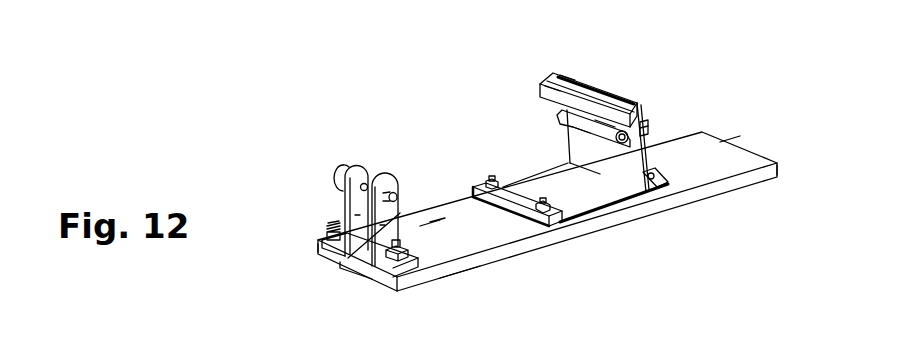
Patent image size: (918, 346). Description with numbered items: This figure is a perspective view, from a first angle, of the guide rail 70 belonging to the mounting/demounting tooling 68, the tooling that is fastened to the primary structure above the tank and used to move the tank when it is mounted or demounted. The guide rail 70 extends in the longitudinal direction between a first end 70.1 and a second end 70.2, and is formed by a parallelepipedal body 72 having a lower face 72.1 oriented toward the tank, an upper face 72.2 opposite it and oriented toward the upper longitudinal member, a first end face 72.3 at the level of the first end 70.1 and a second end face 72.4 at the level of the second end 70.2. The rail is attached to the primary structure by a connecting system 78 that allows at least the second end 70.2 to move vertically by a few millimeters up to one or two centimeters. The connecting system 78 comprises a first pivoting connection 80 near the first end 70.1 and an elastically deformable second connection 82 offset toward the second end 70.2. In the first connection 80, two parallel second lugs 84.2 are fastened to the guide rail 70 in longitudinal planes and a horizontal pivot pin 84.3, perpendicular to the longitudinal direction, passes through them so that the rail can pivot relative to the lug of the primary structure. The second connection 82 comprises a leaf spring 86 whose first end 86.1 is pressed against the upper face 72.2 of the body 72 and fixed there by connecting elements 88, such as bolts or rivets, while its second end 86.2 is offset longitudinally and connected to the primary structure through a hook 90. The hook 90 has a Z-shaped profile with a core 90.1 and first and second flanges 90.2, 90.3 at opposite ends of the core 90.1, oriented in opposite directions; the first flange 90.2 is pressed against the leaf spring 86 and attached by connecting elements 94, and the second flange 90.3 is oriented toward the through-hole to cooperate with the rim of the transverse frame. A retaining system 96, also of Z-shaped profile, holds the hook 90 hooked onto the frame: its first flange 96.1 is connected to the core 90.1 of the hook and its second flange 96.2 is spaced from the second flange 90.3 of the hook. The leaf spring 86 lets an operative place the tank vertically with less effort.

The mounting/demounting tooling 68 is at (430, 140).
The guide rail 70 is at (766, 152).
The first end 70.1 is at (383, 279).
The second end 70.2 is at (735, 141).
The parallelepipedal body 72 is at (494, 260).
The lower face 72.1 is at (460, 272).
The upper face 72.2 is at (430, 233).
The first end face 72.3 is at (317, 249).
The second end face 72.4 is at (780, 168).
The connecting system 78 is at (326, 172).
The first pivoting connection 80 is at (362, 145).
The second connection 82 is at (615, 70).
The second lug 84.2 is at (377, 222).
The pivot pin 84.3 is at (350, 258).
The leaf spring 86 is at (540, 168).
The first end 86.1 is at (471, 214).
The second end 86.2 is at (648, 192).
The connecting element 88 is at (540, 207).
The hook 90 is at (660, 142).
The core 90.1 is at (600, 128).
The first flange 90.2 is at (666, 196).
The second flange 90.3 is at (565, 76).
The connecting elements 94 is at (647, 176).
The retaining system 96 is at (520, 85).
The first flange 96.1 is at (586, 134).
The second flange 96.2 is at (545, 84).